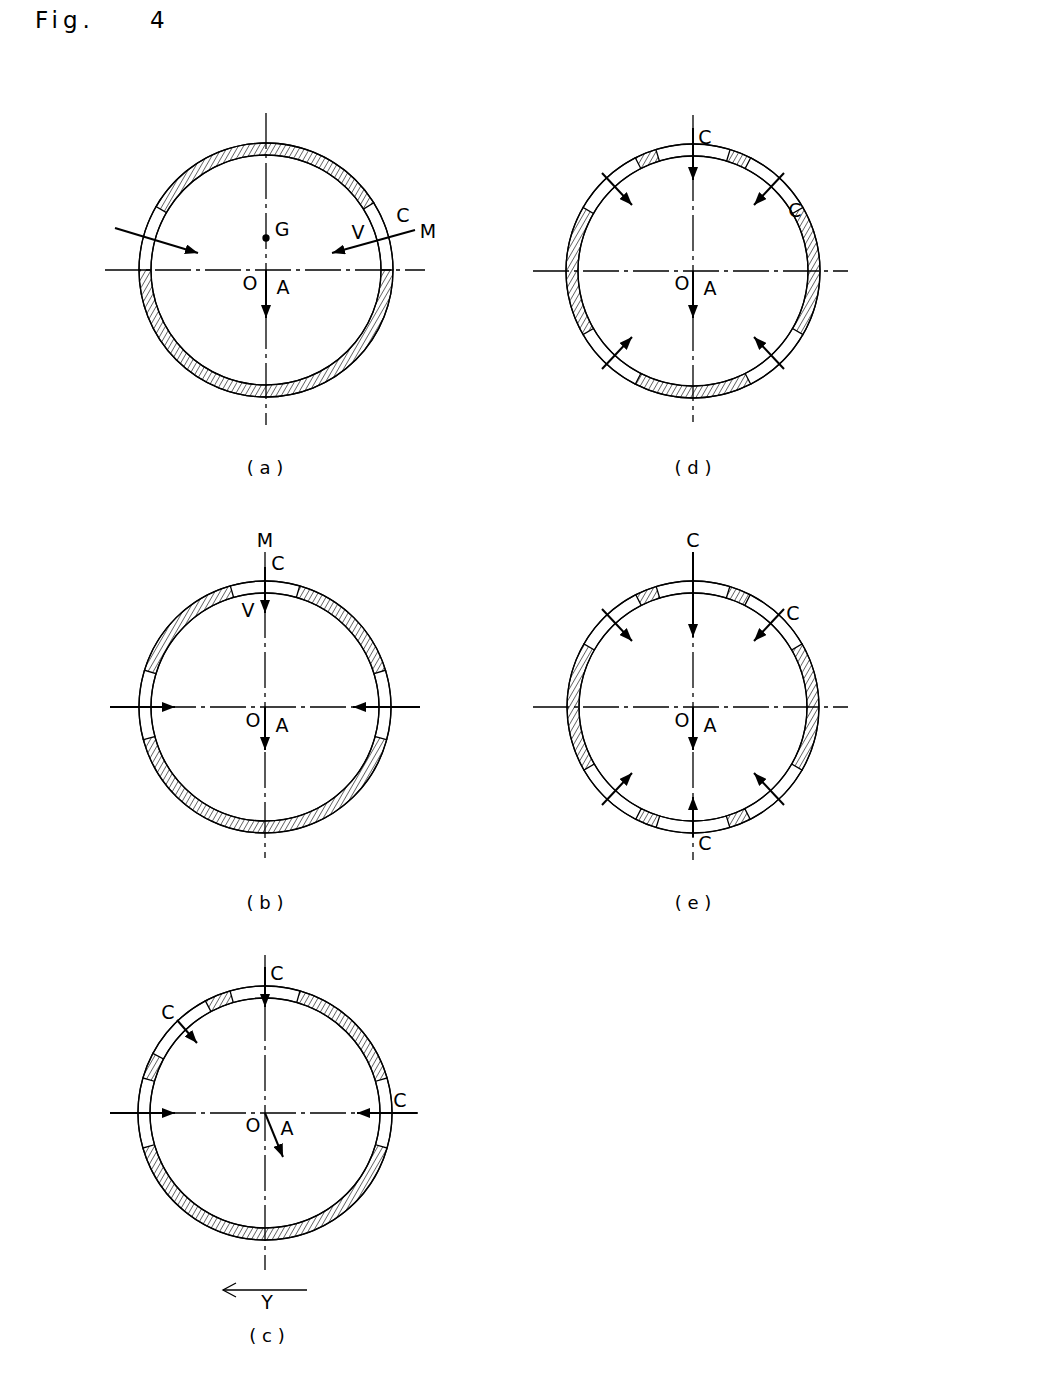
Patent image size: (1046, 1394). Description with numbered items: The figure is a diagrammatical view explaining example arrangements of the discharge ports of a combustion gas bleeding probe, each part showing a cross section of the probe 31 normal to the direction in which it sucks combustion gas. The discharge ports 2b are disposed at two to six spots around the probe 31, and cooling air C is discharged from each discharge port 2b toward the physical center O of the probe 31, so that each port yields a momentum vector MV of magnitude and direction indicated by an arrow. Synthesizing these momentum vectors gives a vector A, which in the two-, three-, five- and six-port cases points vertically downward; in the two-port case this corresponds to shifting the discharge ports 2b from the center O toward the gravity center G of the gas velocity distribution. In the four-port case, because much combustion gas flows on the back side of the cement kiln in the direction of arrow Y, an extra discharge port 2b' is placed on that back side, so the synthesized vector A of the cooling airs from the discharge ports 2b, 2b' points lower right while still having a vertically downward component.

The probe 31 is at (353, 362).
The discharge port 2b is at (454, 651).
The discharge port 2b' is at (153, 1030).